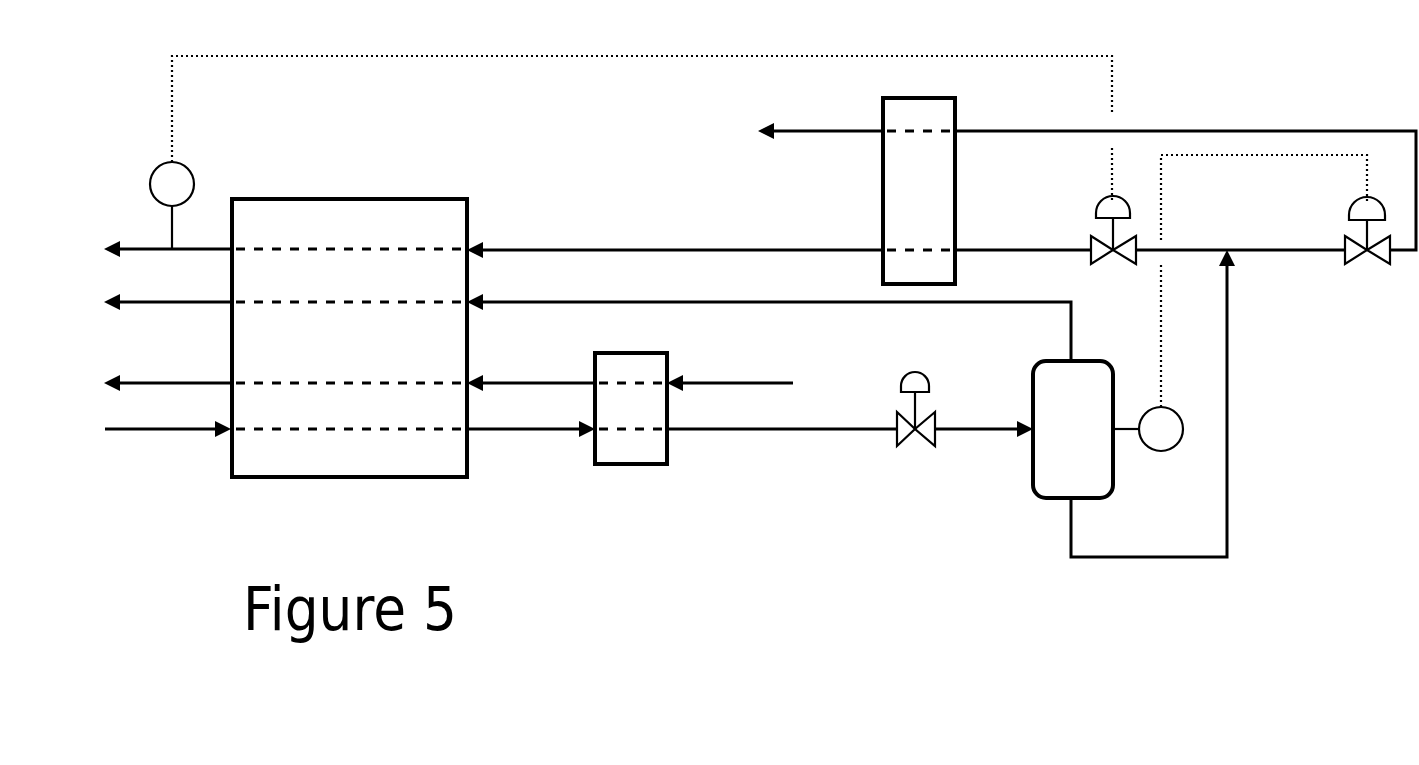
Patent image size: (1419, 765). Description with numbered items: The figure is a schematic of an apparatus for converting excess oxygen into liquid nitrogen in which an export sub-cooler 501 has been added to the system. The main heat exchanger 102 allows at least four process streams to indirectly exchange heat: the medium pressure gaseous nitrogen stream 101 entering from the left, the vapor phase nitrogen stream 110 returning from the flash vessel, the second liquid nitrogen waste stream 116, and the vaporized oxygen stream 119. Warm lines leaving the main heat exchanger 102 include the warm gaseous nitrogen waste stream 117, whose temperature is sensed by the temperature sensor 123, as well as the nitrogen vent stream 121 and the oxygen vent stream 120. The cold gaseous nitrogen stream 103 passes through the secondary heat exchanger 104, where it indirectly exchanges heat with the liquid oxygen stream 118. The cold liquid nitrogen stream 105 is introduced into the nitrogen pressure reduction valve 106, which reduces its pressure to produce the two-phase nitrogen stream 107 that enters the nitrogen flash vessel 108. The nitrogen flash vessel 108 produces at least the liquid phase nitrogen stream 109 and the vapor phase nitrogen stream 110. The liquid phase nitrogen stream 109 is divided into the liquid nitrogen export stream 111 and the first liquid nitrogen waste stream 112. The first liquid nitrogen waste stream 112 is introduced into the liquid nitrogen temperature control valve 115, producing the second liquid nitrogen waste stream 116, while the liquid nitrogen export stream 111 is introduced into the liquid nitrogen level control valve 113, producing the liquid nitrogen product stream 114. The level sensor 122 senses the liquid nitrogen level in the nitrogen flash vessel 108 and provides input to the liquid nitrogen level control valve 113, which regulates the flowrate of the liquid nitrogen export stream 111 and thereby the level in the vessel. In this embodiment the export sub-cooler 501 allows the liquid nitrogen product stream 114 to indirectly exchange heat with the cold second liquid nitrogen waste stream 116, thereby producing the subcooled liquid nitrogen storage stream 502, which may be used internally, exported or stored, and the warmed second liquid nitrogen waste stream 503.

The medium pressure gaseous nitrogen stream 101 is at (138, 429).
The main heat exchanger 102 is at (349, 317).
The cold gaseous nitrogen stream 103 is at (531, 445).
The secondary heat exchanger 104 is at (631, 428).
The cold liquid nitrogen stream 105 is at (782, 451).
The nitrogen pressure reduction valve 106 is at (914, 428).
The two-phase nitrogen stream 107 is at (984, 449).
The nitrogen flash vessel 108 is at (1073, 429).
The liquid phase nitrogen stream 109 is at (1180, 403).
The vapor phase nitrogen stream 110 is at (769, 327).
The liquid nitrogen export stream 111 is at (1286, 273).
The first liquid nitrogen waste stream 112 is at (1181, 273).
The liquid nitrogen level control valve 113 is at (1368, 250).
The liquid nitrogen product stream 114 is at (1185, 173).
The liquid nitrogen temperature control valve 115 is at (1112, 249).
The second liquid nitrogen waste stream 116 is at (1023, 231).
The warm gaseous nitrogen waste stream 117 is at (138, 249).
The liquid oxygen stream 118 is at (758, 383).
The vaporized oxygen stream 119 is at (531, 369).
The oxygen vent stream 120 is at (138, 383).
The nitrogen vent stream 121 is at (138, 302).
The level sensor 122 is at (1240, 321).
The temperature sensor 123 is at (601, 152).
The export sub-cooler 501 is at (919, 191).
The subcooled liquid nitrogen storage stream 502 is at (788, 131).
The warmed second liquid nitrogen waste stream 503 is at (675, 233).